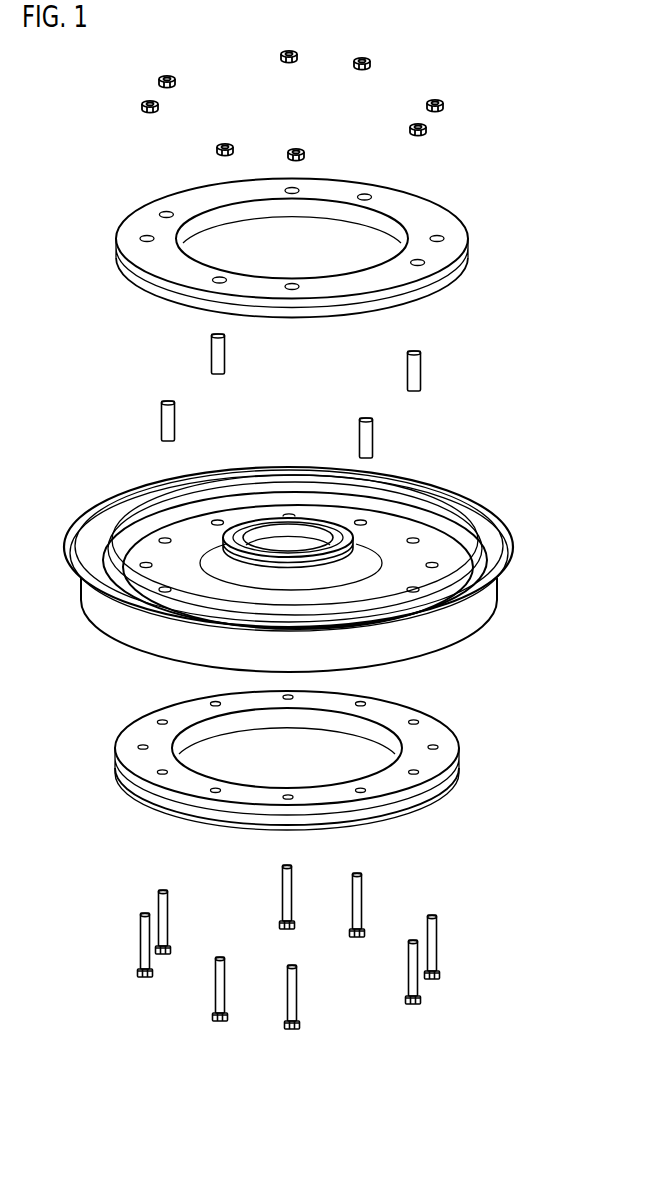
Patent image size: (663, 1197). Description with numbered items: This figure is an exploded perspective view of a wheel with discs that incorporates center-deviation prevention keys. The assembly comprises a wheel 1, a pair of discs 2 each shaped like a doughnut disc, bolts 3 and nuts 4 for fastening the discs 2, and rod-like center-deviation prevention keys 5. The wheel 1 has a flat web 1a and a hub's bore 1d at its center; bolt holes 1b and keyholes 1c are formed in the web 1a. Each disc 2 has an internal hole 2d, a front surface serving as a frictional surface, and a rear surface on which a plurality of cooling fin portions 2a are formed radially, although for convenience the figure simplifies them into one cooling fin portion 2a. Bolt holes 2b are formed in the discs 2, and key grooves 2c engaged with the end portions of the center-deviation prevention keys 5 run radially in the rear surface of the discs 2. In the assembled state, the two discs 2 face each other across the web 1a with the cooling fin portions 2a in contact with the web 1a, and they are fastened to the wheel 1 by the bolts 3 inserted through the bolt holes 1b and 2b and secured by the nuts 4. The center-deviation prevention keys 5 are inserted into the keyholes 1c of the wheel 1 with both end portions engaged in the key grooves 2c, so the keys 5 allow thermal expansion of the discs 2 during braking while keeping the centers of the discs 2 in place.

The wheel 1 is at (316, 547).
The web 1a is at (430, 548).
The bolt holes 1b is at (160, 538).
The keyholes 1c is at (214, 521).
The hub's bore 1d is at (318, 540).
The disc 2 is at (470, 244).
The cooling fin portions 2a is at (437, 290).
The bolt holes 2b is at (148, 237).
The key grooves 2c is at (213, 706).
The internal hole 2d is at (352, 222).
The bolts 3 is at (140, 945).
The nuts 4 is at (142, 105).
The center-deviation prevention keys 5 is at (211, 352).